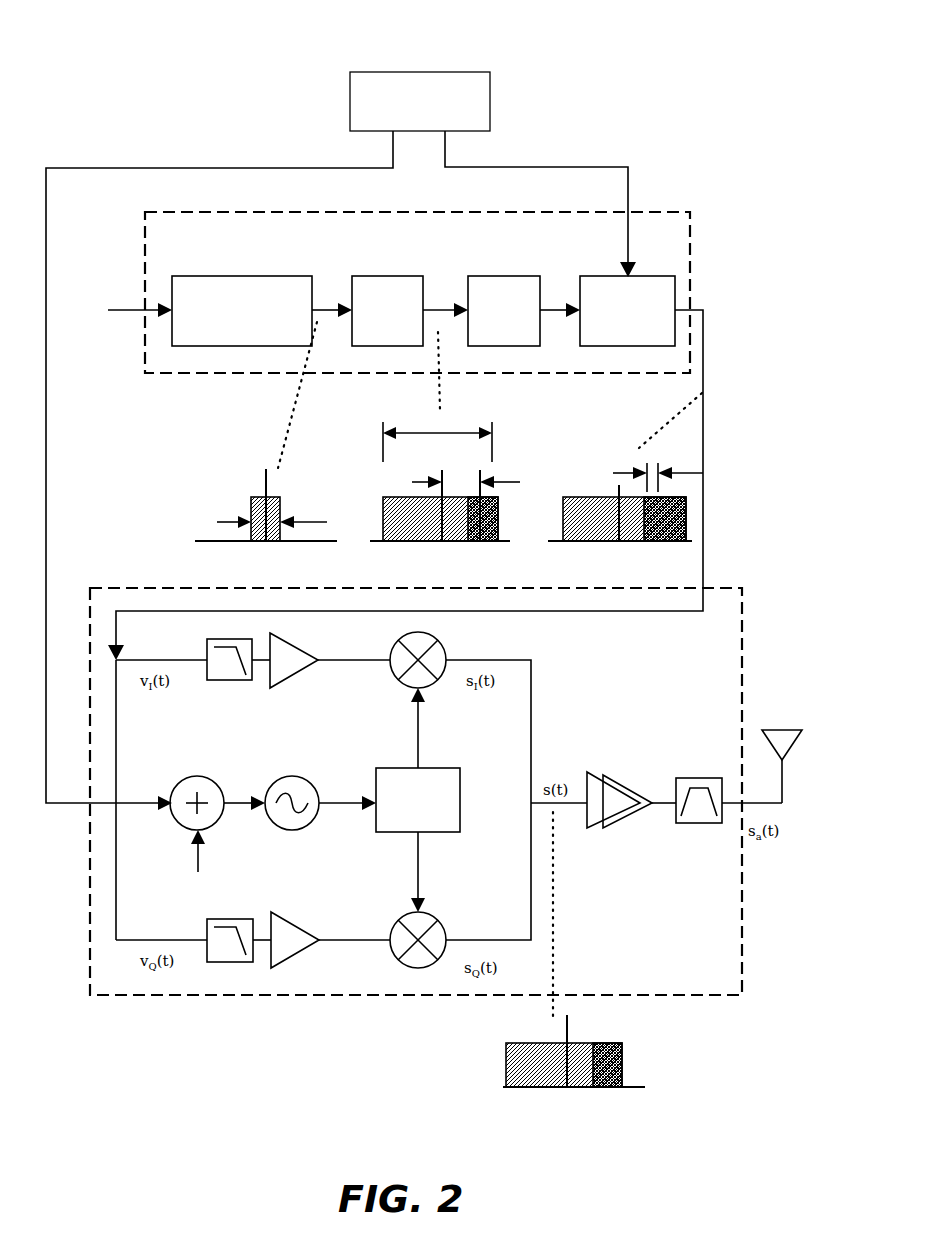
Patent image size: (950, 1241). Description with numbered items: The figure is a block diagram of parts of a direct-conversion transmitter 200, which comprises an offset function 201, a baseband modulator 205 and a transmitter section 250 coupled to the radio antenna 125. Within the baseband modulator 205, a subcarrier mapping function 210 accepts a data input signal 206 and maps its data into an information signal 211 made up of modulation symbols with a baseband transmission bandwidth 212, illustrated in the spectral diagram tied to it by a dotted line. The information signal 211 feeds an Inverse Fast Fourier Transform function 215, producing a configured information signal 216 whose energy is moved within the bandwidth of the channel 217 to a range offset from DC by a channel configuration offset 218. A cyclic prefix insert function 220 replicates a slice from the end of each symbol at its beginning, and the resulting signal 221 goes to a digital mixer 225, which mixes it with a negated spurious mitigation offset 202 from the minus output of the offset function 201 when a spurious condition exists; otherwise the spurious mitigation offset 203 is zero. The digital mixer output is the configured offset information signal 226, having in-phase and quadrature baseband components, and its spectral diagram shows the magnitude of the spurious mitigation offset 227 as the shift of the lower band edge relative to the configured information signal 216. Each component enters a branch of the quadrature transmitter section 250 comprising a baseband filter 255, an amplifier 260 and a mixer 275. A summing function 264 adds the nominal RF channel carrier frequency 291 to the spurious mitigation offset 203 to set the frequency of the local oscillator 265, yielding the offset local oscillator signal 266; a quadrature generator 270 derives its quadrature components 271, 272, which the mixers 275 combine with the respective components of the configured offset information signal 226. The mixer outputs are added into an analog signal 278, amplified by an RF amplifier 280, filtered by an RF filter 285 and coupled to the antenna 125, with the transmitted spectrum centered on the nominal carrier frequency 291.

The transmitter 200 is at (633, 29).
The offset function 201 is at (347, 94).
The negated spurious mitigation offset 202 is at (547, 165).
The spurious mitigation offset 203 is at (100, 168).
The baseband modulator 205 is at (655, 207).
The data input signal 206 is at (123, 312).
The subcarrier mapping function 210 is at (247, 275).
The information signal 211 is at (317, 307).
The transmission bandwidth 212 is at (247, 518).
The Inverse Fast Fourier Transform function 215 is at (377, 275).
The configured information signal 216 is at (437, 303).
The bandwidth of the channel 217 is at (440, 433).
The channel configuration offset 218 is at (425, 498).
The cyclic prefix insert function 220 is at (497, 272).
The resulting signal 221 is at (545, 308).
The digital mixer 225 is at (667, 273).
The configured offset information signal 226 is at (707, 367).
The magnitude of the spurious mitigation offset 227 is at (625, 499).
The transmitter section 250 is at (750, 608).
The baseband filter 255 is at (218, 687).
The amplifier 260 is at (303, 675).
The summing function 264 is at (202, 776).
The local oscillator 265 is at (310, 777).
The offset local oscillator signal 266 is at (334, 808).
The quadrature generator 270 is at (450, 800).
The quadrature component 271 is at (422, 743).
The quadrature component 272 is at (423, 870).
The mixer 275 is at (443, 642).
The analog signal 278 is at (557, 805).
The RF amplifier 280 is at (617, 775).
The RF filter 285 is at (702, 823).
The RF channel carrier frequency 291 is at (203, 858).
The radio antenna 125 is at (793, 722).